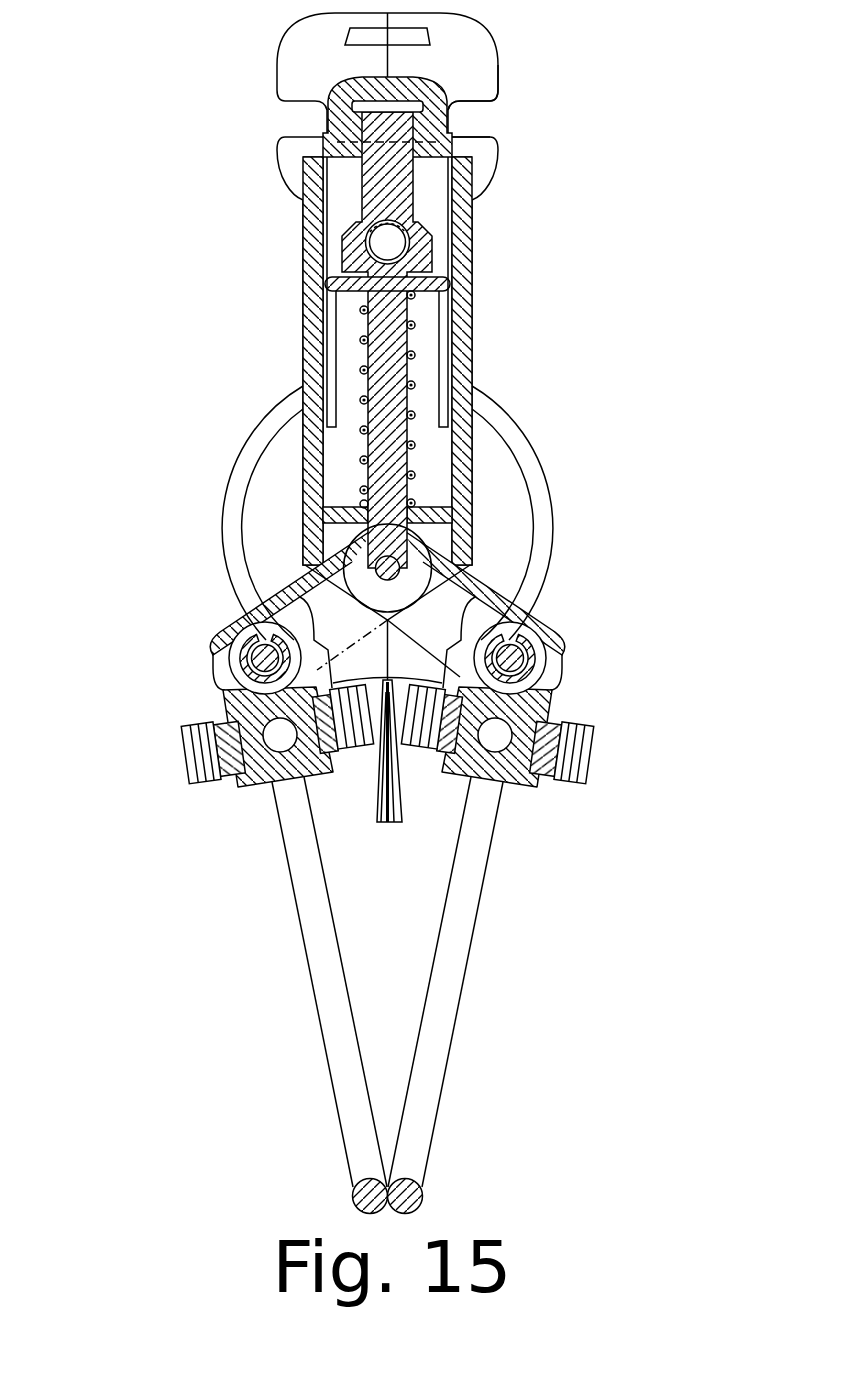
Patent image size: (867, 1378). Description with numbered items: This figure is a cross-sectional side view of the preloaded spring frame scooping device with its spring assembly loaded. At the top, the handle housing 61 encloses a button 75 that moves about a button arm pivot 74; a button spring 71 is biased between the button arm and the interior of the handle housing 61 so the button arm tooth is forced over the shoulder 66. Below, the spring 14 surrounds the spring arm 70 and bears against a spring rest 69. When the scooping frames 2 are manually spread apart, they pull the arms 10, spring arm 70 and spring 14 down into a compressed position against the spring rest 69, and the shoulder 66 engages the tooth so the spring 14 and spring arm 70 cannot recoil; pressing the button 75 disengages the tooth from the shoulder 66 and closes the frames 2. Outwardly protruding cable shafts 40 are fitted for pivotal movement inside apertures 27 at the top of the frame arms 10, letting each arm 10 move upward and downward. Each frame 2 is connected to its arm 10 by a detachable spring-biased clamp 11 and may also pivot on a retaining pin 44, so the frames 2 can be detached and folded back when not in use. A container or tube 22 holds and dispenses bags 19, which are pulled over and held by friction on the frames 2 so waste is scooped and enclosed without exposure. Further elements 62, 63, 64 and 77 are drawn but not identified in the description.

The scooping frames 2 is at (303, 898).
The frame arms 10 is at (447, 605).
The detachable clamp 11 is at (193, 755).
The spring 14 is at (410, 383).
The bags 19 is at (403, 813).
The container or tube 22 is at (247, 458).
The apertures 27 is at (305, 565).
The cable shafts 40 is at (420, 532).
The retaining pin 44 is at (547, 672).
The handle housing 61 is at (287, 43).
The knob shoulder 62 is at (498, 82).
The screw head 63 is at (350, 142).
The sleeve 64 is at (326, 321).
The shoulder 66 is at (327, 281).
The spring rest 69 is at (325, 490).
The spring arm 70 is at (393, 463).
The button spring 71 is at (370, 224).
The button arm pivot 74 is at (348, 135).
The button 75 is at (407, 33).
The neck 77 is at (468, 120).